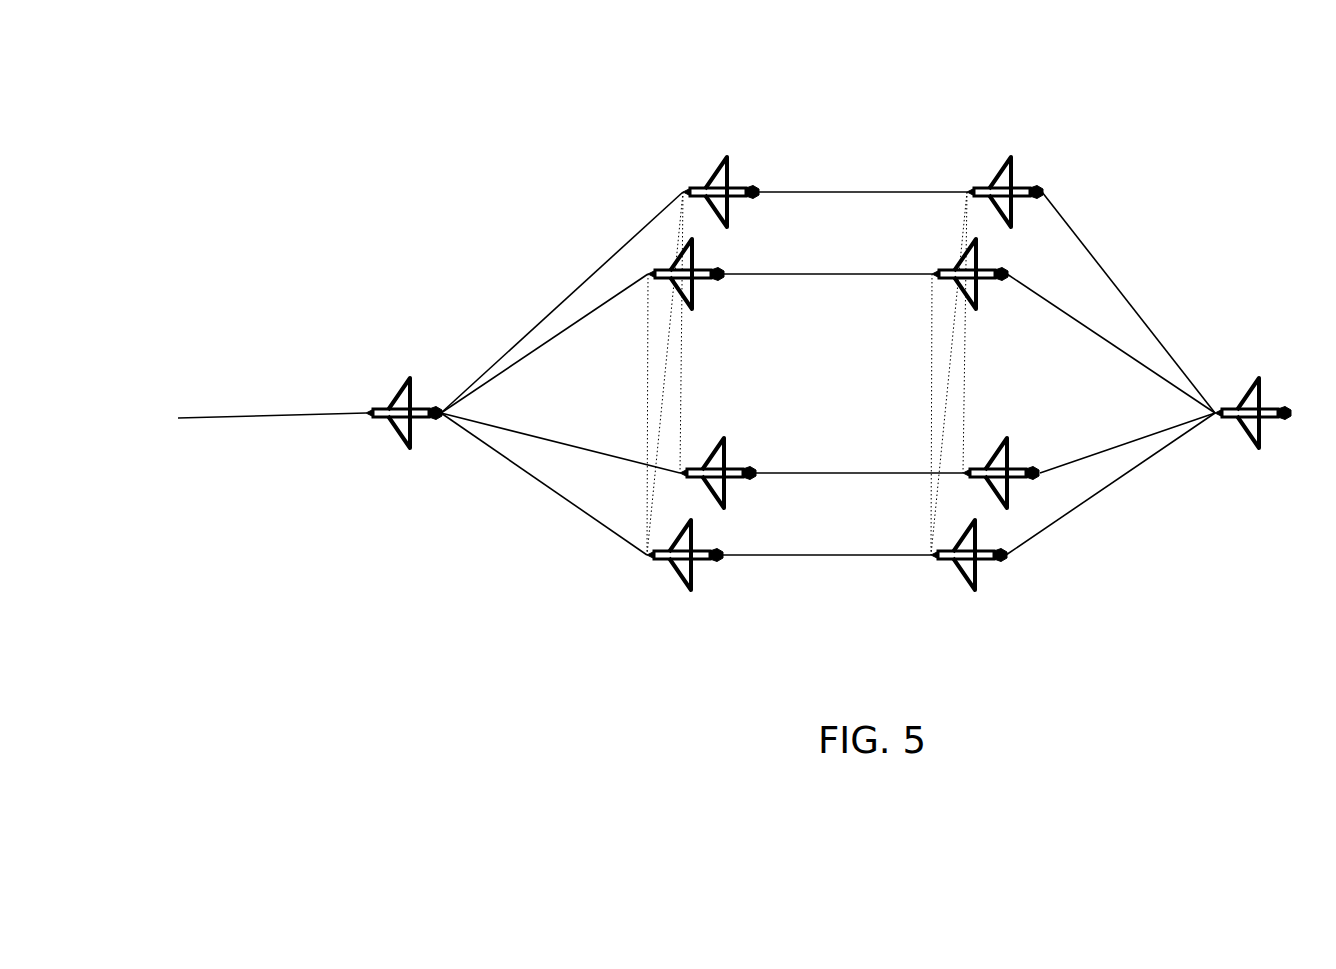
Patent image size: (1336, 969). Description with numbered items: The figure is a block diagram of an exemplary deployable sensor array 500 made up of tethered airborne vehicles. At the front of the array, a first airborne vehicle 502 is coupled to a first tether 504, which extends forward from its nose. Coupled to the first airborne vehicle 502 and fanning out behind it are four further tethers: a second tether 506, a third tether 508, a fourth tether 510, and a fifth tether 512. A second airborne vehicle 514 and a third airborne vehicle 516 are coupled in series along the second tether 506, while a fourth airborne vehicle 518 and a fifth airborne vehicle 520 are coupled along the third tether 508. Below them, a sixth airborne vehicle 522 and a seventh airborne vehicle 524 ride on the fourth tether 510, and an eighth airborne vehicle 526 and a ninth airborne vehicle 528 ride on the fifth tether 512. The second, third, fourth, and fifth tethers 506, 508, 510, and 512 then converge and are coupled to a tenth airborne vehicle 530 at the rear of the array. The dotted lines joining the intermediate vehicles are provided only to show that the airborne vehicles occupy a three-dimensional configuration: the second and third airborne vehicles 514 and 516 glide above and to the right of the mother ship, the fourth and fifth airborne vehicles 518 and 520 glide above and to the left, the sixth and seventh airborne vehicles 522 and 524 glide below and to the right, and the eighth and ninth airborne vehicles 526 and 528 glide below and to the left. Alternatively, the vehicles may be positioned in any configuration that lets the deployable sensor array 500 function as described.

The deployable sensor array 500 is at (1163, 93).
The first airborne vehicle 502 is at (380, 410).
The first tether 504 is at (268, 415).
The second tether 506 is at (622, 245).
The third tether 508 is at (543, 343).
The fourth tether 510 is at (541, 443).
The fifth tether 512 is at (568, 508).
The second airborne vehicle 514 is at (690, 188).
The third airborne vehicle 516 is at (972, 188).
The fourth airborne vehicle 518 is at (698, 303).
The fifth airborne vehicle 520 is at (935, 270).
The sixth airborne vehicle 522 is at (729, 503).
The seventh airborne vehicle 524 is at (965, 470).
The eighth airborne vehicle 526 is at (696, 586).
The ninth airborne vehicle 528 is at (942, 553).
The tenth airborne vehicle 530 is at (1259, 385).